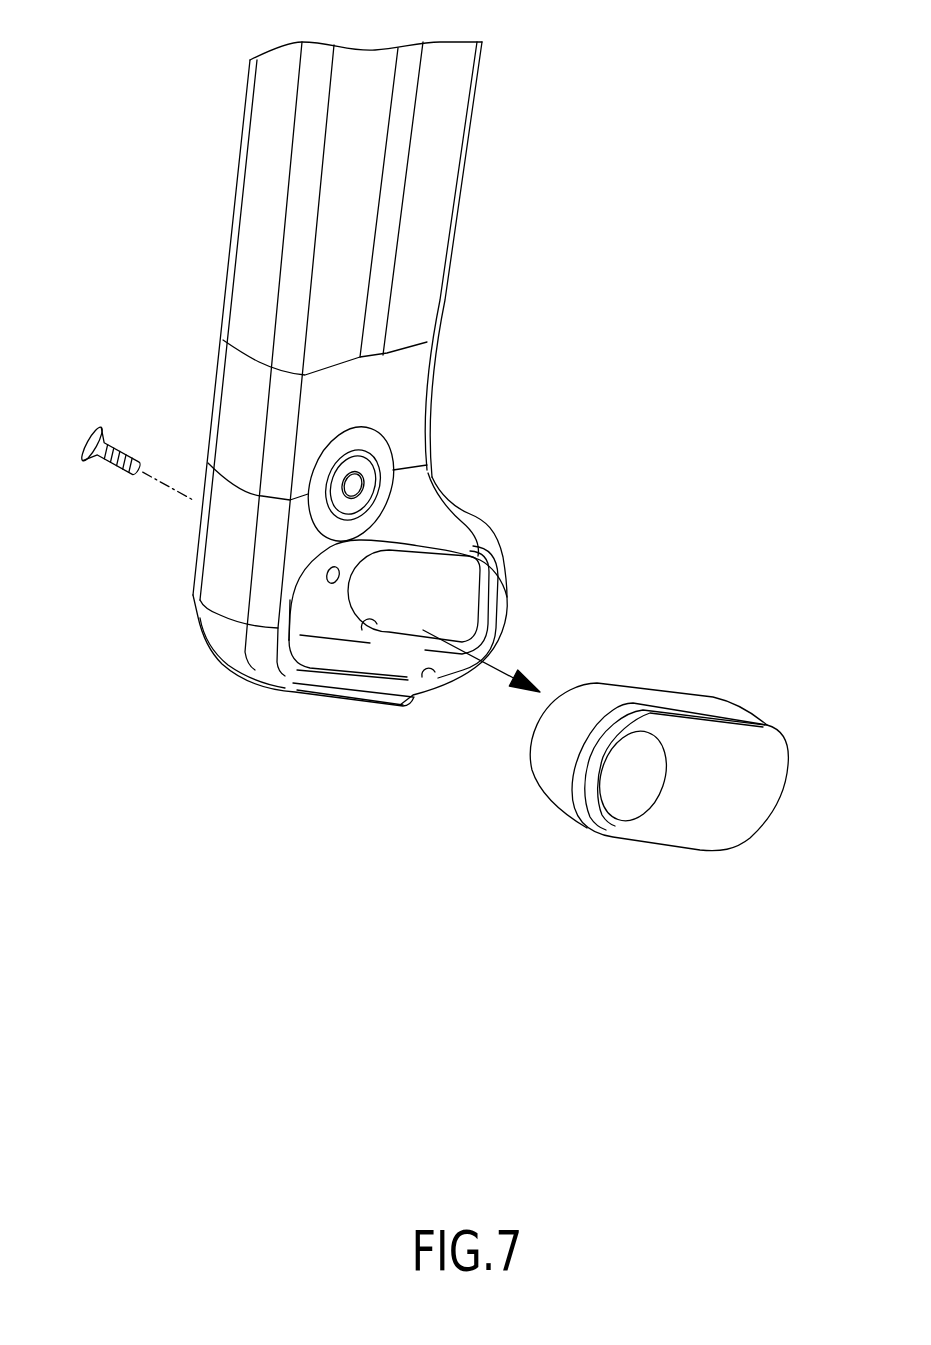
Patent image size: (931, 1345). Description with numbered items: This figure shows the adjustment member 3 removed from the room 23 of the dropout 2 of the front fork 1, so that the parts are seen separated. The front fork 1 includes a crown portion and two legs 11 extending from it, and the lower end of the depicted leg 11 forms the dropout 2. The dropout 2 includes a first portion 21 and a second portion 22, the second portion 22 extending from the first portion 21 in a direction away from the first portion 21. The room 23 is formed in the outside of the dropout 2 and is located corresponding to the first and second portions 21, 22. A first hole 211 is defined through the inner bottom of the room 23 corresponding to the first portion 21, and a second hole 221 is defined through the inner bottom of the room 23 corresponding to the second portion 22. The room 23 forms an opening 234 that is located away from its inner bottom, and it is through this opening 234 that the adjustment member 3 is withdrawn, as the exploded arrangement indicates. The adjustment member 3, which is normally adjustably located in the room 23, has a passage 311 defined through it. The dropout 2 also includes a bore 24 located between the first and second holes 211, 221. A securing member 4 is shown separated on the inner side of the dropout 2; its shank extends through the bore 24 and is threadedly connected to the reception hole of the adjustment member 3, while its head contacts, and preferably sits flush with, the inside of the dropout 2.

The front fork 1 is at (397, 344).
The leg 11 is at (452, 250).
The dropout 2 is at (352, 608).
The first portion 21 is at (259, 630).
The first hole 211 is at (303, 588).
The second portion 22 is at (505, 595).
The second hole 221 is at (363, 630).
The room 23 is at (300, 650).
The opening 234 is at (428, 678).
The bore 24 is at (342, 574).
The adjustment member 3 is at (659, 797).
The passage 311 is at (622, 803).
The securing member 4 is at (100, 427).